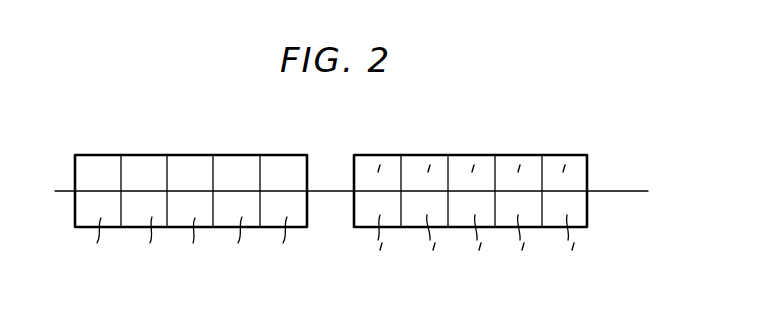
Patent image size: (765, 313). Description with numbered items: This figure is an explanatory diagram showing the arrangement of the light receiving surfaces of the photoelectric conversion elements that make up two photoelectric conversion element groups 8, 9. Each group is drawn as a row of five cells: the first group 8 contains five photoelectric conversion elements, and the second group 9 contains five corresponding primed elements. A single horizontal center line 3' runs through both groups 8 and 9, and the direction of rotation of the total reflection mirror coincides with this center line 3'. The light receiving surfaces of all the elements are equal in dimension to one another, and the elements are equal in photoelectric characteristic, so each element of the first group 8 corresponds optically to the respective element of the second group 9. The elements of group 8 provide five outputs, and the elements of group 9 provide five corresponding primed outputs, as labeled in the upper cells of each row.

The photoelectric conversion element group 8 is at (235, 155).
The photoelectric conversion element group 9 is at (507, 155).
The center line 3' is at (351, 165).